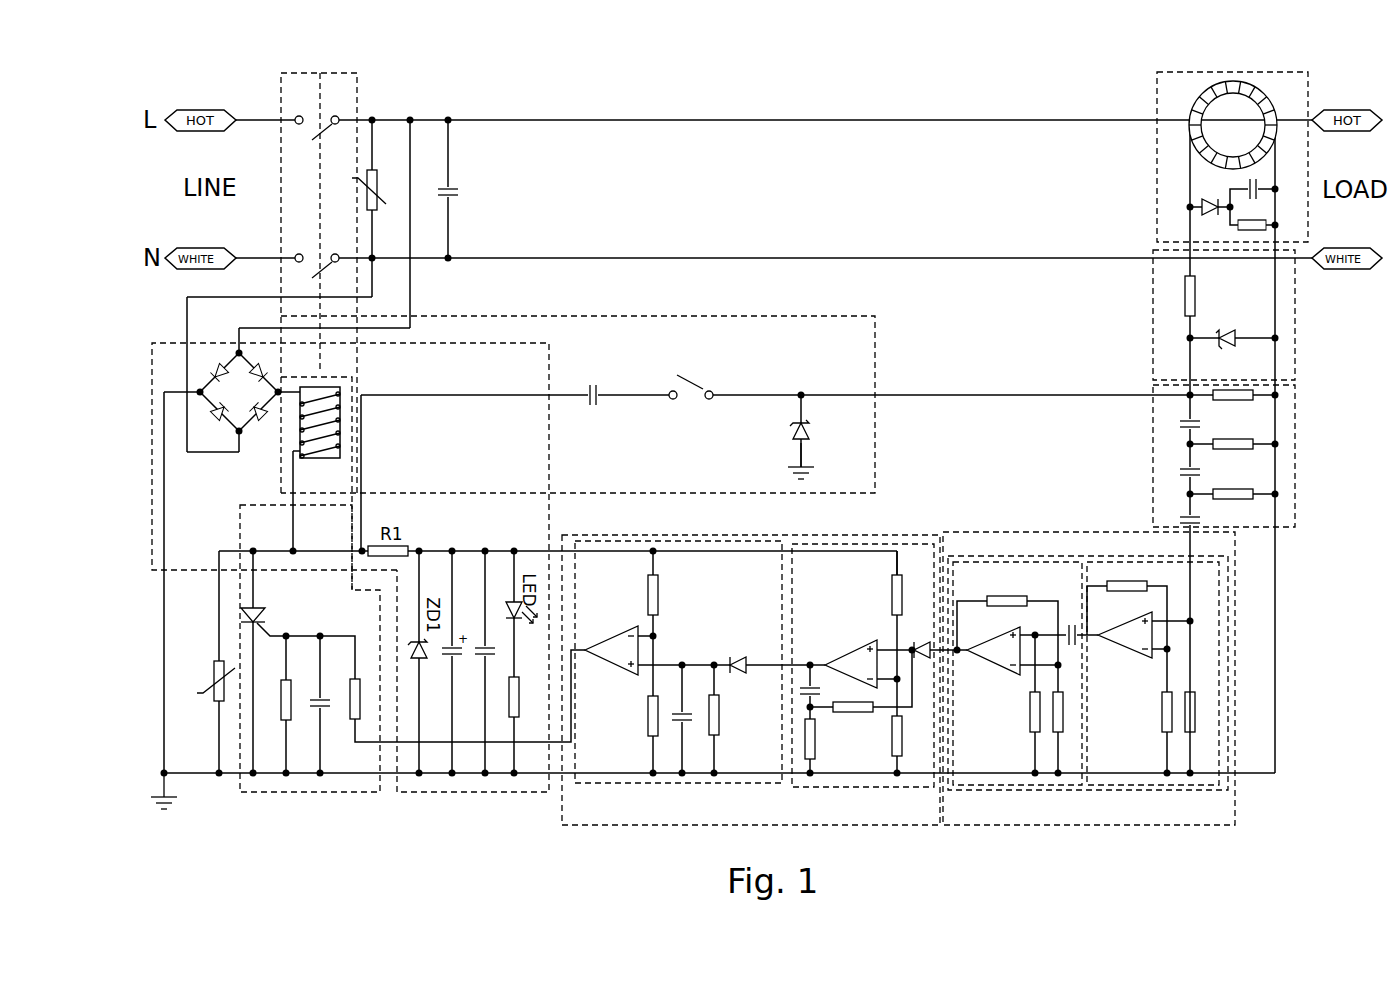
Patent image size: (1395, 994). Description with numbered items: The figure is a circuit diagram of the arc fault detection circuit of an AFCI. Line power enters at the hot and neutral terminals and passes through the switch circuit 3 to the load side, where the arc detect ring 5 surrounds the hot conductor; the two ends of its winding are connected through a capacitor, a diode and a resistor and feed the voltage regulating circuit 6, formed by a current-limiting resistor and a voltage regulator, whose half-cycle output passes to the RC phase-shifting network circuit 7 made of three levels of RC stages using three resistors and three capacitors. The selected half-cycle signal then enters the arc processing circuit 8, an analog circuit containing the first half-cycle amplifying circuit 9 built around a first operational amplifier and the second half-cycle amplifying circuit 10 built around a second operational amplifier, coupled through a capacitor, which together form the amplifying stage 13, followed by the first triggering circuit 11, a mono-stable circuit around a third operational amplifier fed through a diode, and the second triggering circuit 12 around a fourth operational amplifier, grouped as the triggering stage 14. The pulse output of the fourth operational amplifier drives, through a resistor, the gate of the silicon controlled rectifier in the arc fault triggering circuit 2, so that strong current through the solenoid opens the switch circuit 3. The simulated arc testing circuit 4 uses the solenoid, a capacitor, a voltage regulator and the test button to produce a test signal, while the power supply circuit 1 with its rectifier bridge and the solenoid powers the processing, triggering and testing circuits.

The power supply circuit 1 is at (324, 576).
The arc fault triggering circuit 2 is at (383, 666).
The switch circuit 3 is at (349, 266).
The simulated arc testing circuit 4 is at (778, 453).
The arc detect ring 5 is at (1200, 422).
The voltage regulating circuit 6 is at (1191, 315).
The RC phase-shifting network circuit 7 is at (1191, 456).
The arc processing circuit 8 is at (1116, 482).
The first half-cycle amplifying circuit 9 is at (1153, 673).
The second half-cycle amplifying circuit 10 is at (1025, 673).
The first triggering circuit 11 is at (879, 665).
The second triggering circuit 12 is at (700, 662).
The amplifying circuit 13 is at (1088, 688).
The second triggering circuit 14 is at (764, 680).